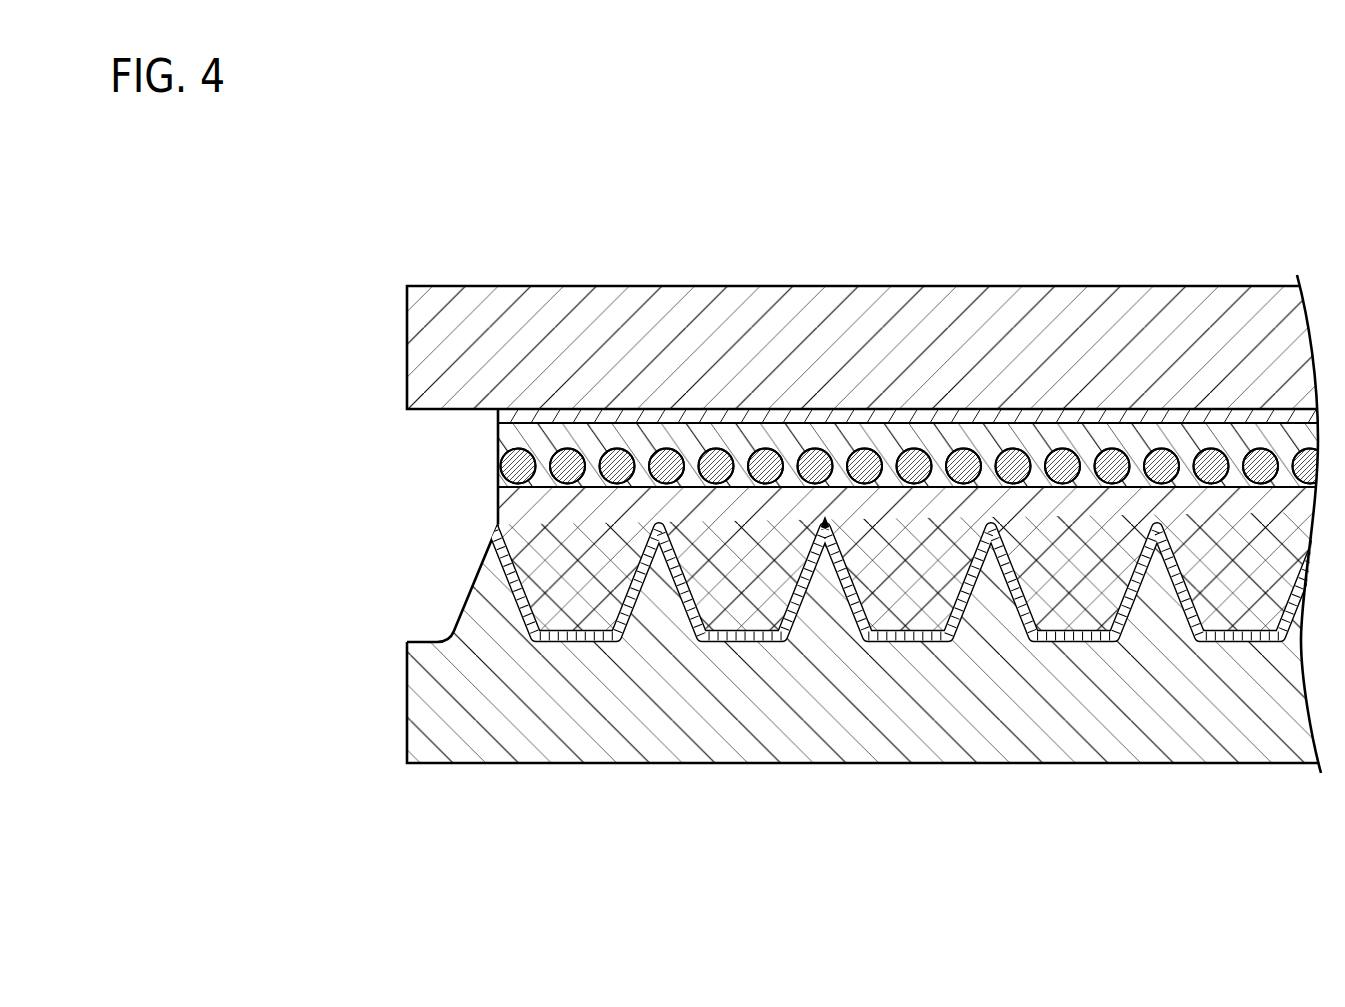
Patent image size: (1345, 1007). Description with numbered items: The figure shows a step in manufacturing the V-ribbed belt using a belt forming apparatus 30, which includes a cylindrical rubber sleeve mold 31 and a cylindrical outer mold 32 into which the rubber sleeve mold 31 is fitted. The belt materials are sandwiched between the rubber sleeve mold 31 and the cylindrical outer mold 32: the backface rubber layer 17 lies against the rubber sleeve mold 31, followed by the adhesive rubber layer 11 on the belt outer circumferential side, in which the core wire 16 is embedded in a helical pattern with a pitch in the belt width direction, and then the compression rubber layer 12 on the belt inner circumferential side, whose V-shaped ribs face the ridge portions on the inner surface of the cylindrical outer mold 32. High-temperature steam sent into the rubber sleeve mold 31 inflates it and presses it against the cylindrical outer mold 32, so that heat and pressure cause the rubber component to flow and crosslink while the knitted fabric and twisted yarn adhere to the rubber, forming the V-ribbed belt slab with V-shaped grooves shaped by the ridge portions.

The belt forming apparatus 30 is at (245, 477).
The rubber sleeve mold 31 is at (433, 350).
The cylindrical outer mold 32 is at (430, 700).
The adhesive rubber layer 11 is at (508, 438).
The compression rubber layer 12 is at (507, 505).
The core wire 16 is at (872, 449).
The backface rubber layer 17 is at (507, 417).